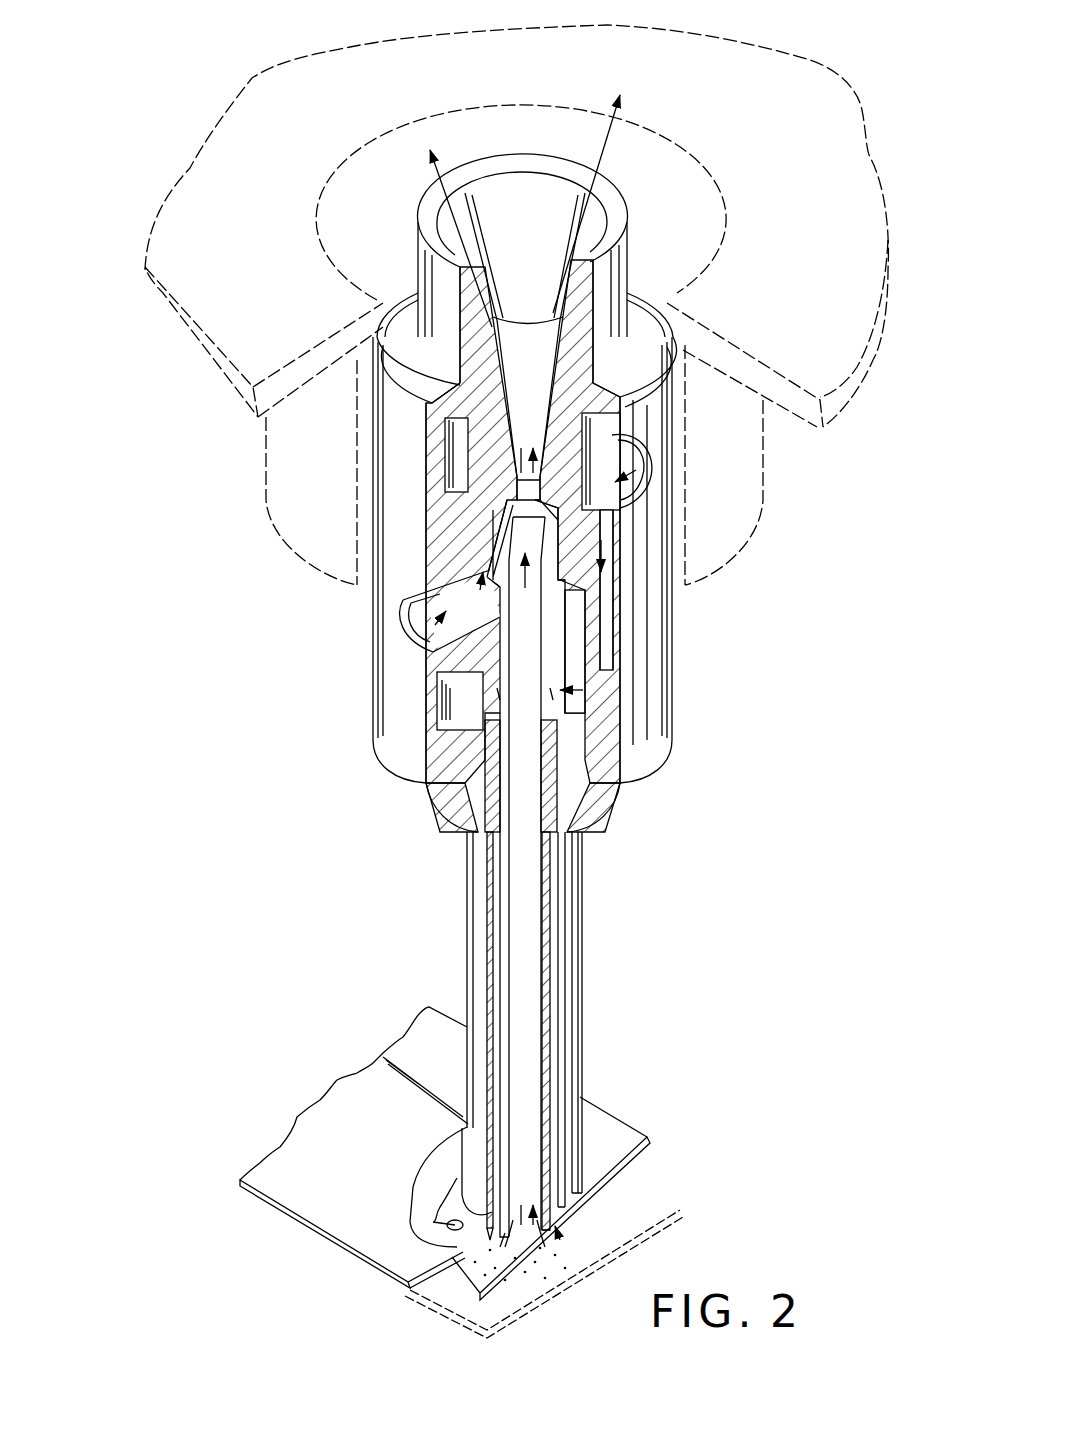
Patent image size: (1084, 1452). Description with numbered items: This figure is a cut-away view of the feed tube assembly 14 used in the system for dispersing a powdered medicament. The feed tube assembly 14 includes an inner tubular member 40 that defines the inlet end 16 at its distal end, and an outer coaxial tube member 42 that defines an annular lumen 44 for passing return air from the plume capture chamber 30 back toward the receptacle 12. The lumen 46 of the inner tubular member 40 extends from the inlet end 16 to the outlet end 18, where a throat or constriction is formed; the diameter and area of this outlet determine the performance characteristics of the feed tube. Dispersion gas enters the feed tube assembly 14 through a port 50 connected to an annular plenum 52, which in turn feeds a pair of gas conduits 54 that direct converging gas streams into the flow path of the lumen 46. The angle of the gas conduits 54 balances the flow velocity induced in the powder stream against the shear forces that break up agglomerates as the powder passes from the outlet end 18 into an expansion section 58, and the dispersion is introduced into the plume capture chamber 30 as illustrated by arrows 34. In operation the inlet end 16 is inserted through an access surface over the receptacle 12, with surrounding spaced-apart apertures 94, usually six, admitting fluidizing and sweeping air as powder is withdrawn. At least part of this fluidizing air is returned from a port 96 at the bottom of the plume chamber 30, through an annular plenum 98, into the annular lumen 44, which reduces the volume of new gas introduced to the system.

The receptacle 12 is at (470, 1283).
The feed tube assembly 14 is at (290, 735).
The inlet end 16 is at (550, 1233).
The outlet end 18 is at (553, 512).
The plume capture chamber 30 is at (843, 180).
The arrows 34 is at (452, 178).
The inner tubular member 40 is at (547, 845).
The outer coaxial tube member 42 is at (560, 1013).
The annular lumen 44 is at (497, 860).
The lumen 46 is at (528, 937).
The port 50 is at (440, 600).
The annular plenum 52 is at (563, 597).
The gas conduits 54 is at (535, 503).
The expansion section 58 is at (543, 382).
The spaced-apart apertures 94 is at (443, 1220).
The port 96 is at (650, 473).
The annular plenum 98 is at (607, 647).